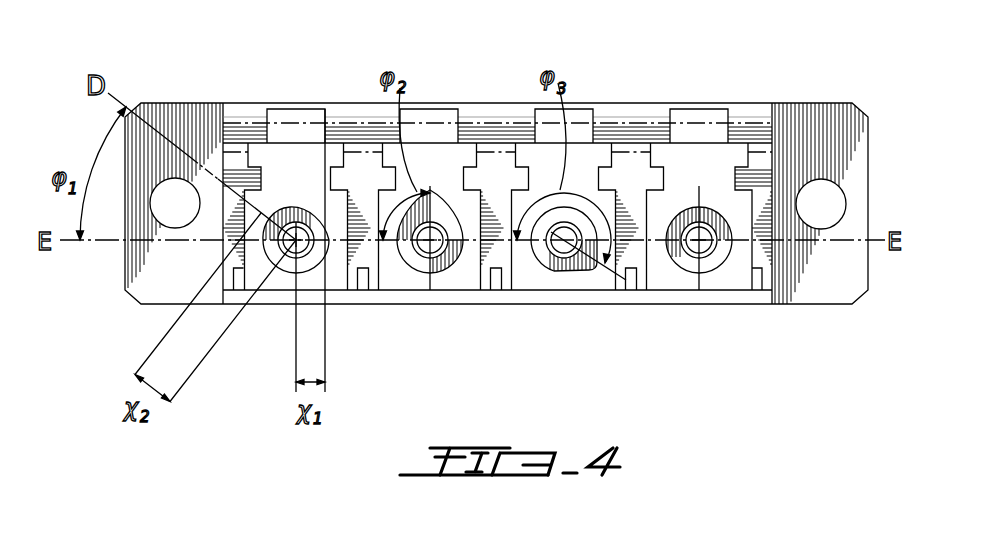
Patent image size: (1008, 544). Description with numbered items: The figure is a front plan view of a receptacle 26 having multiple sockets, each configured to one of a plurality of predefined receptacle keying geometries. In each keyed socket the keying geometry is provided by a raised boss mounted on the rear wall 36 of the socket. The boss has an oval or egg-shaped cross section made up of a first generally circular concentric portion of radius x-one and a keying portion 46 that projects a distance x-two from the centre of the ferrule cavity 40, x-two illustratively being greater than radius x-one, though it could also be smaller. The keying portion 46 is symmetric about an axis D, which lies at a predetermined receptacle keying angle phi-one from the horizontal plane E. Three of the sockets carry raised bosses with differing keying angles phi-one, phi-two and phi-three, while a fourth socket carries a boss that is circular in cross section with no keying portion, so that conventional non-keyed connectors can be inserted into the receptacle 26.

The receptacle 26 is at (475, 75).
The rear wall 36 is at (286, 120).
The ferrule cavity 40 is at (295, 145).
The keying portion 46 is at (258, 218).